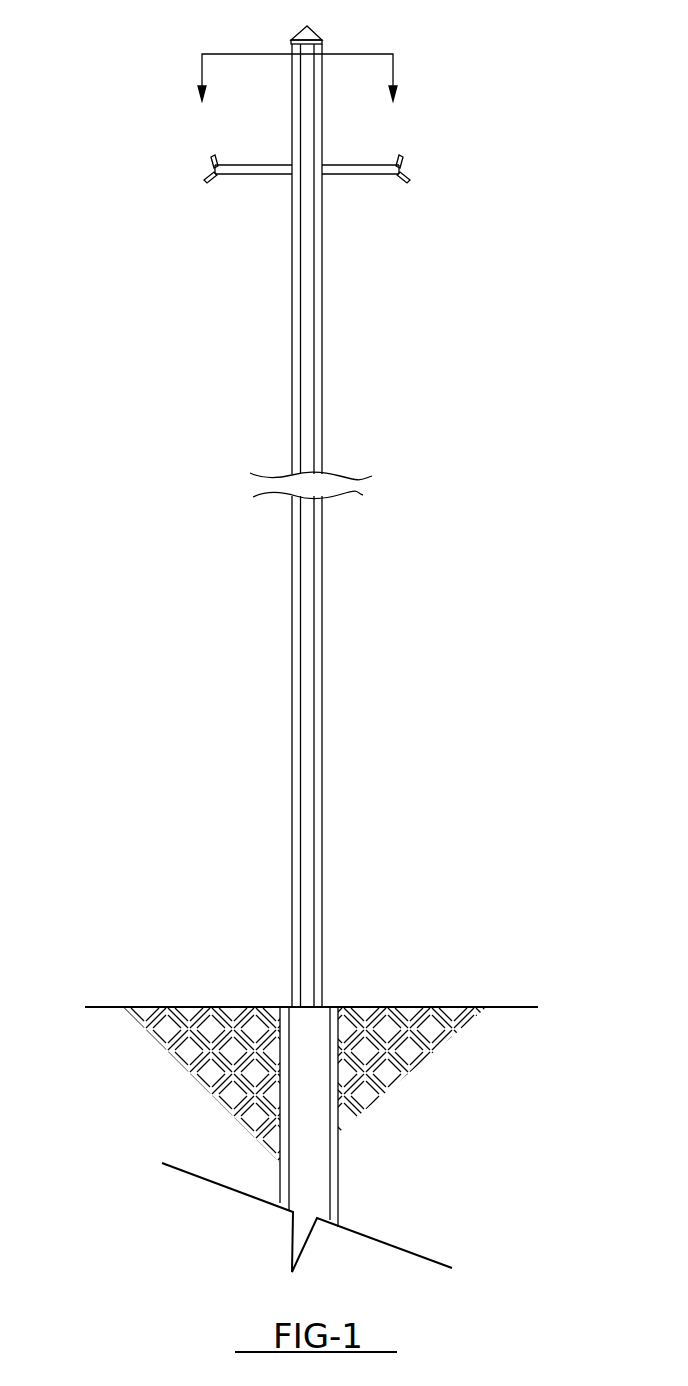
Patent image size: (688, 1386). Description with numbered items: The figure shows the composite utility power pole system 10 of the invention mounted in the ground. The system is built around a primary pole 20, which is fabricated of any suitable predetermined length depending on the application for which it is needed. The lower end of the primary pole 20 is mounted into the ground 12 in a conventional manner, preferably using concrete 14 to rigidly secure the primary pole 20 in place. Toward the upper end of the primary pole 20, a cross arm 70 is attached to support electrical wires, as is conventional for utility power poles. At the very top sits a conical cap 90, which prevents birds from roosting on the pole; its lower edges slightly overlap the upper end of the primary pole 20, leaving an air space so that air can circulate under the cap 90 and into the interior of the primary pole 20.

The composite utility power pole system 10 is at (324, 615).
The ground 12 is at (402, 1017).
The concrete 14 is at (317, 1138).
The primary pole 20 is at (306, 438).
The cross arm 70 is at (363, 180).
The conical cap 90 is at (301, 38).